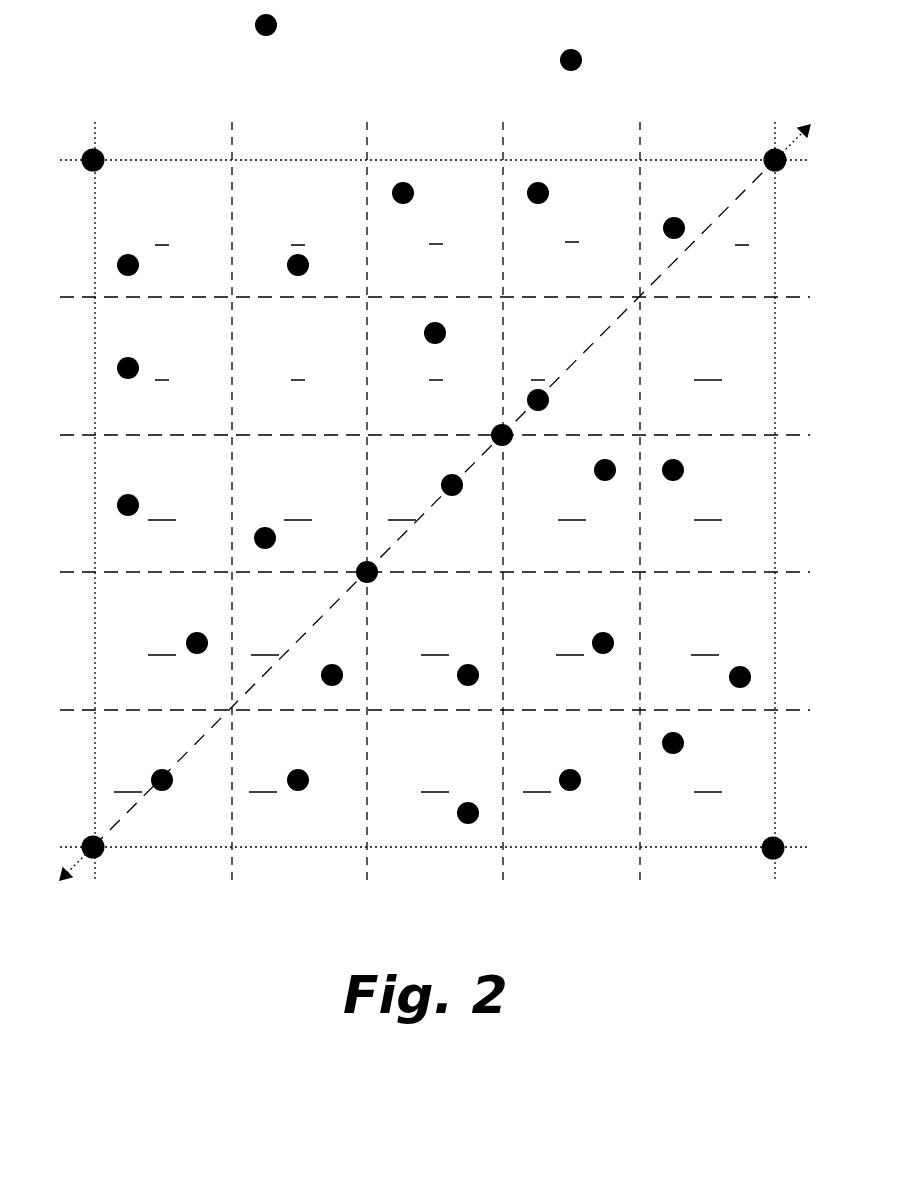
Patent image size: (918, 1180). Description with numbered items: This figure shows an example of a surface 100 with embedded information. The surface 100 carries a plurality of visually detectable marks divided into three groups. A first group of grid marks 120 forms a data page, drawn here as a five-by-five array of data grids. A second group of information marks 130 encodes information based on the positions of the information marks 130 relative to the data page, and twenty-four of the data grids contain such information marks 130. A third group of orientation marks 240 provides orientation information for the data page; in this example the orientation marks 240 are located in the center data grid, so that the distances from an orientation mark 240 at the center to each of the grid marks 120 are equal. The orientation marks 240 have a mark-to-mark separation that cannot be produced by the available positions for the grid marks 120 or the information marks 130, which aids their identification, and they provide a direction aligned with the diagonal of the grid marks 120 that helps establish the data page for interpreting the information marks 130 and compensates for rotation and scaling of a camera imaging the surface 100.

The surface 100 is at (406, 27).
The grid marks 120 is at (434, 485).
The information marks 130 is at (353, 694).
The orientation marks 240 is at (394, 566).